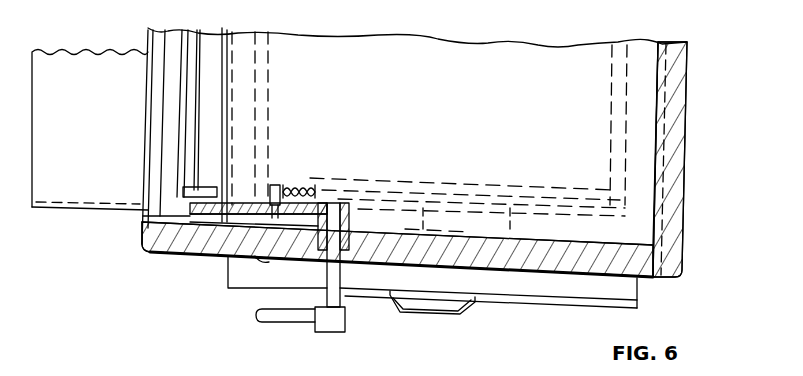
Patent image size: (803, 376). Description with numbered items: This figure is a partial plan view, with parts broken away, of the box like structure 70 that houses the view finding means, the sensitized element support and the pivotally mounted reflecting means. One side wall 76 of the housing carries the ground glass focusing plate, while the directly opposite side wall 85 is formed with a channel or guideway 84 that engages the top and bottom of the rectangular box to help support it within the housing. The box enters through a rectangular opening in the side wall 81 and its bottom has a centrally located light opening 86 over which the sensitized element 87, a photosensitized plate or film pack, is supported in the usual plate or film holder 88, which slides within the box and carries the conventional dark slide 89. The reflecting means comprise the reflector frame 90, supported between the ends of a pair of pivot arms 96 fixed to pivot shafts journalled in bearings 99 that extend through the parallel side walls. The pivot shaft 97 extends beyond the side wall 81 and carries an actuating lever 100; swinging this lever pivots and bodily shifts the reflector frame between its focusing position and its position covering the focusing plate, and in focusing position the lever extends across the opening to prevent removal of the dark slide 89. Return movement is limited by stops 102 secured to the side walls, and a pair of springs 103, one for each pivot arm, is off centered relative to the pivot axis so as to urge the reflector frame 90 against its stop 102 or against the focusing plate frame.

The box like structure 70 is at (690, 92).
The side wall 76 is at (163, 212).
The side wall 81 is at (645, 263).
The channel or guideway 84 is at (664, 156).
The side wall 85 is at (672, 198).
The light opening 86 is at (272, 95).
The sensitized element 87 is at (535, 47).
The plate or film holder 88 is at (223, 50).
The dark slide 89 is at (243, 276).
The reflector frame 90 is at (556, 220).
The pivot arms 96 is at (240, 215).
The pivot shaft 97 is at (331, 274).
The bearings 99 is at (348, 232).
The actuating lever 100 is at (279, 314).
The stops 102 is at (528, 227).
The springs 103 is at (305, 184).